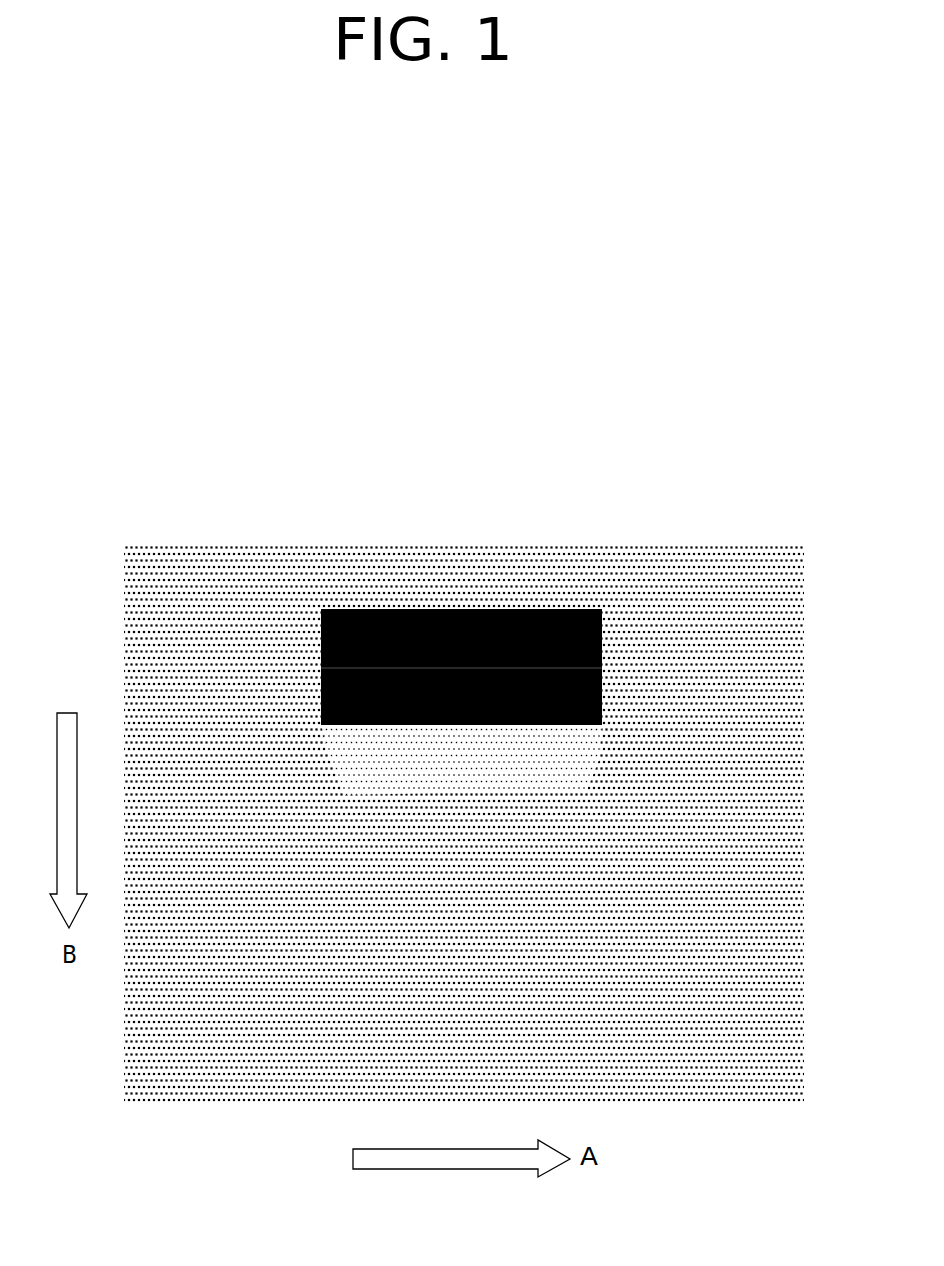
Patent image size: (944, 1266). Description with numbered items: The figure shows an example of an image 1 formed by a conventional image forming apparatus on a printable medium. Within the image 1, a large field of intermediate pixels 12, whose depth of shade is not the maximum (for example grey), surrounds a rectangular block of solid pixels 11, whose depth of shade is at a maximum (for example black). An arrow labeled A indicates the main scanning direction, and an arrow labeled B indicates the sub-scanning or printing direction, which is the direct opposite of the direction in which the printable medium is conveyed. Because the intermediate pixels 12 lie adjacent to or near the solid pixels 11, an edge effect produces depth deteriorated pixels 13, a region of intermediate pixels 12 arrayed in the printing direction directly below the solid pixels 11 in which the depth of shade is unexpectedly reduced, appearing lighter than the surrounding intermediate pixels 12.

The image 1 is at (118, 444).
The solid pixels 11 is at (372, 608).
The intermediate pixels 12 is at (660, 545).
The depth deteriorated pixels 13 is at (592, 755).